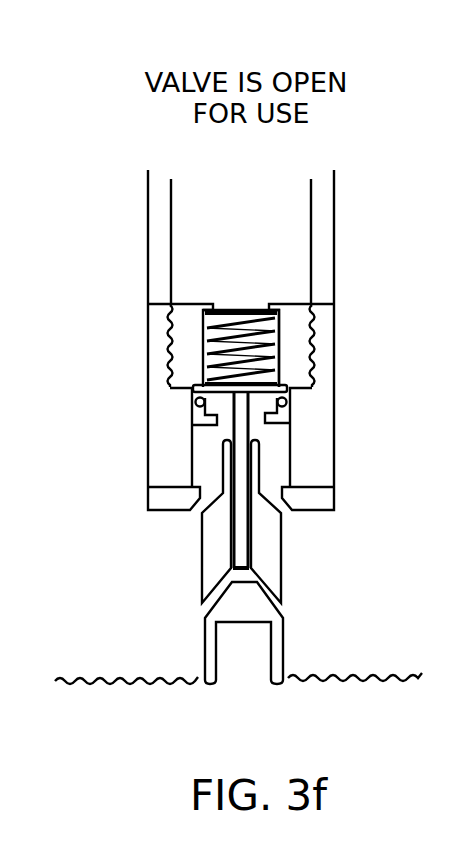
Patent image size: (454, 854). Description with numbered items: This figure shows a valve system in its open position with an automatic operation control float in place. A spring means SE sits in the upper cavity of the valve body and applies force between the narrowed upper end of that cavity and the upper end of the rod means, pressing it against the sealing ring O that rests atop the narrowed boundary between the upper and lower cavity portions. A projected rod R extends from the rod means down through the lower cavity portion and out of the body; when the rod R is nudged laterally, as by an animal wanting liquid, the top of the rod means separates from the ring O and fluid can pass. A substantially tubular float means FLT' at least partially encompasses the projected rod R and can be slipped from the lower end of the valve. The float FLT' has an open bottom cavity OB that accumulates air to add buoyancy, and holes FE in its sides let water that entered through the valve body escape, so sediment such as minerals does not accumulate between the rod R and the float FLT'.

The spring means SE is at (242, 308).
The "O" ring O is at (187, 397).
The projected rod R is at (233, 535).
The float means FLT' is at (314, 521).
The holes FE is at (202, 608).
The open bottom cavity OB is at (242, 658).